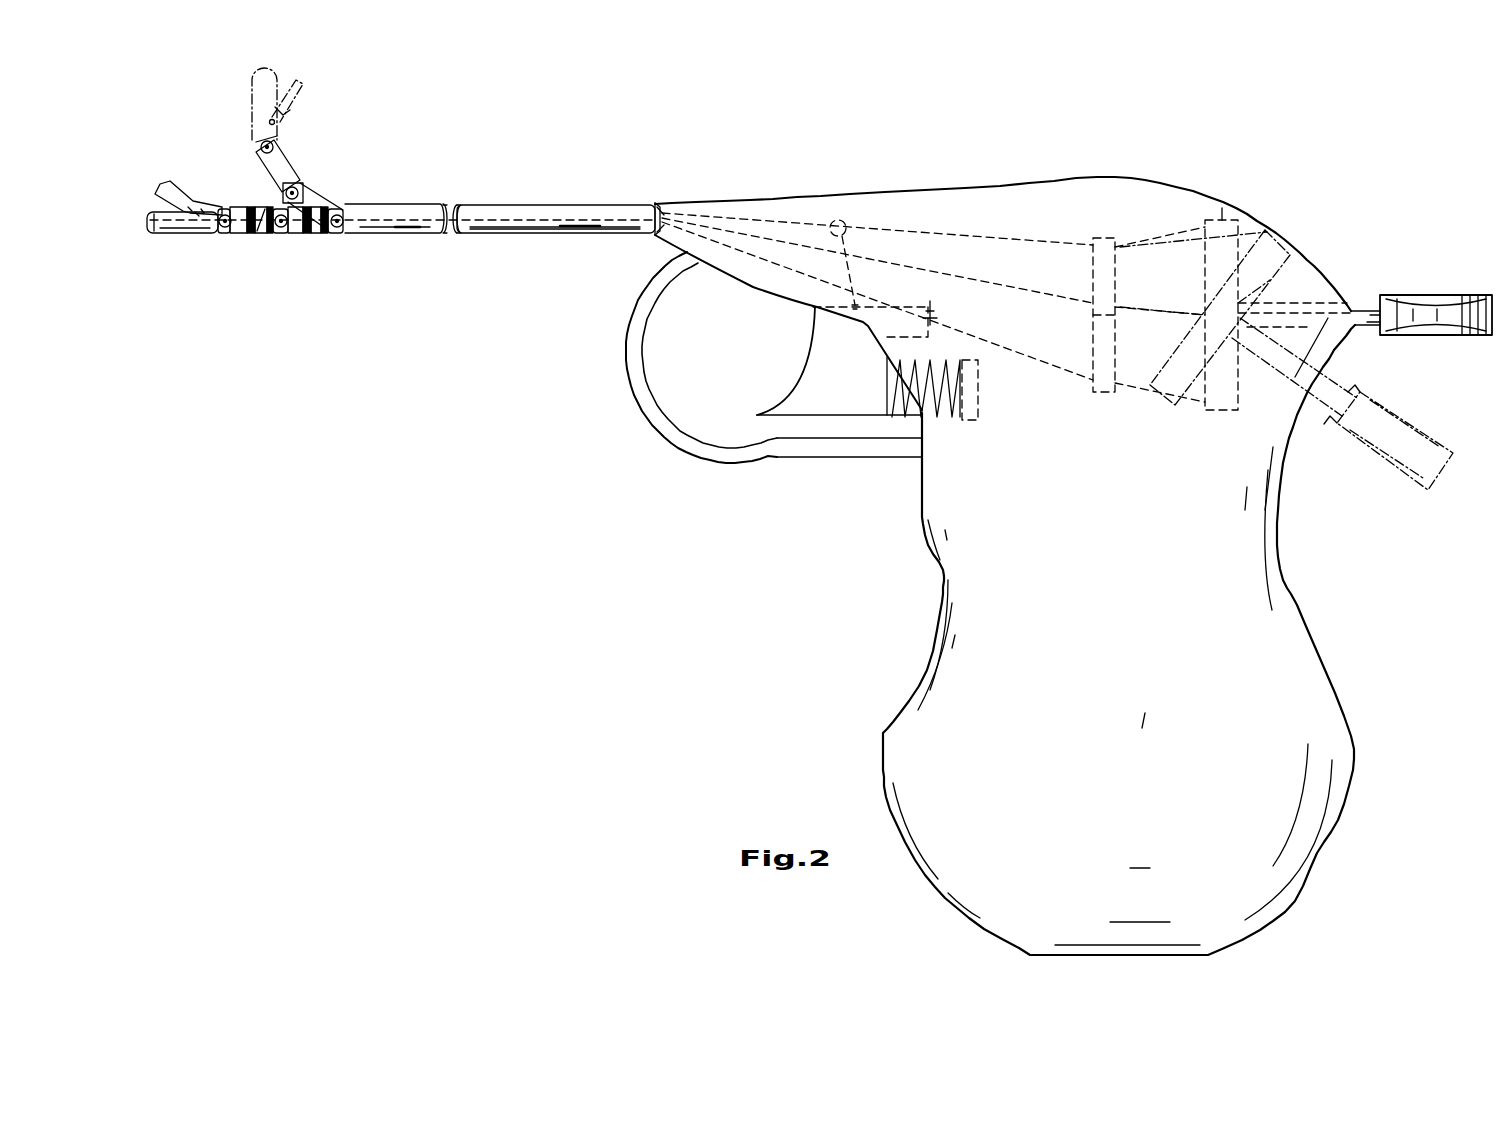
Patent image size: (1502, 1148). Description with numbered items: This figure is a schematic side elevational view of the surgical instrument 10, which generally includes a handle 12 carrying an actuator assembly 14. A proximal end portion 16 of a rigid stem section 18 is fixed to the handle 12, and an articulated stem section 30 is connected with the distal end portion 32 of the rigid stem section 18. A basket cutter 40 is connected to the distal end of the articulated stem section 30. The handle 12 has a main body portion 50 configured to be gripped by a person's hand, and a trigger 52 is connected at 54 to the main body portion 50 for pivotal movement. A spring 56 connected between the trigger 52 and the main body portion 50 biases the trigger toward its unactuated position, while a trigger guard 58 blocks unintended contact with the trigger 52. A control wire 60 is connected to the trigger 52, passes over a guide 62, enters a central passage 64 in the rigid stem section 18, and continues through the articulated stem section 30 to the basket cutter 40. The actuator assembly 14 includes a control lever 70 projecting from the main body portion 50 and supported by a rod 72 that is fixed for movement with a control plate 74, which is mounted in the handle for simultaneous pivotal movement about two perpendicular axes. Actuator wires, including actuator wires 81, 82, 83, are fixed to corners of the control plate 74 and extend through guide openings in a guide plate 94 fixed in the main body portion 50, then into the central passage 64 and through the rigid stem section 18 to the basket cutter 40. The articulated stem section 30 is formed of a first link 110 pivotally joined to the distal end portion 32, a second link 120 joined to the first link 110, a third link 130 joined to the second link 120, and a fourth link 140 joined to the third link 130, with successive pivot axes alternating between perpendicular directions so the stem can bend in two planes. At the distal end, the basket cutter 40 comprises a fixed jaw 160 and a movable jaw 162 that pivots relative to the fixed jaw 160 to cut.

The surgical instrument 10 is at (655, 594).
The handle 12 is at (1310, 592).
The actuator assembly 14 is at (1035, 195).
The proximal end portion of rigid stem section 16 is at (615, 205).
The rigid stem section 18 is at (587, 242).
The articulated stem section 30 is at (328, 172).
The distal end portion of rigid stem section 32 is at (370, 203).
The basket cutter 40 is at (186, 246).
The main body portion 50 is at (942, 614).
The trigger 52 is at (812, 352).
The trigger pivot connection 54 is at (942, 305).
The spring 56 is at (938, 420).
The trigger guard 58 is at (634, 395).
The control wire 60 is at (446, 206).
The guide 62 is at (843, 220).
The central passage 64 is at (663, 207).
The control lever 70 is at (1423, 296).
The rod 72 is at (1362, 309).
The control plate 74 is at (1223, 208).
The actuator wire 81 is at (1165, 235).
The actuator wire 82 is at (1067, 297).
The actuator wire 83 is at (1153, 383).
The guide plate 94 is at (1095, 238).
The first link 110 is at (323, 235).
The second link 120 is at (293, 235).
The third link 130 is at (270, 235).
The fourth link 140 is at (240, 235).
The fixed jaw 160 is at (155, 234).
The movable jaw 162 is at (180, 190).